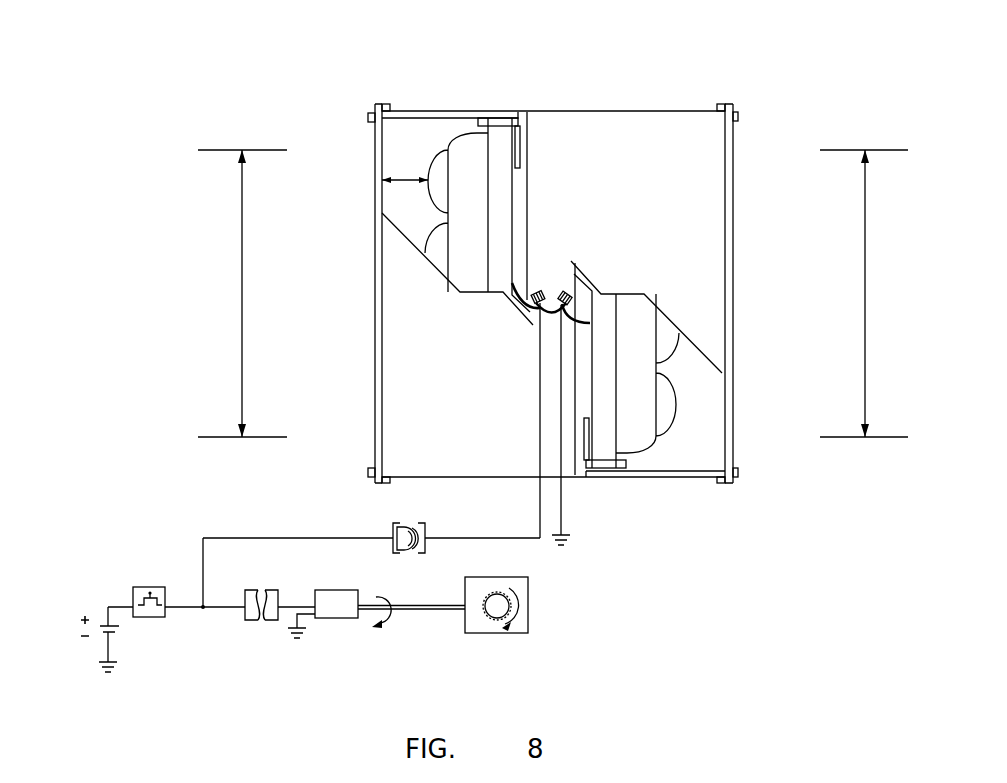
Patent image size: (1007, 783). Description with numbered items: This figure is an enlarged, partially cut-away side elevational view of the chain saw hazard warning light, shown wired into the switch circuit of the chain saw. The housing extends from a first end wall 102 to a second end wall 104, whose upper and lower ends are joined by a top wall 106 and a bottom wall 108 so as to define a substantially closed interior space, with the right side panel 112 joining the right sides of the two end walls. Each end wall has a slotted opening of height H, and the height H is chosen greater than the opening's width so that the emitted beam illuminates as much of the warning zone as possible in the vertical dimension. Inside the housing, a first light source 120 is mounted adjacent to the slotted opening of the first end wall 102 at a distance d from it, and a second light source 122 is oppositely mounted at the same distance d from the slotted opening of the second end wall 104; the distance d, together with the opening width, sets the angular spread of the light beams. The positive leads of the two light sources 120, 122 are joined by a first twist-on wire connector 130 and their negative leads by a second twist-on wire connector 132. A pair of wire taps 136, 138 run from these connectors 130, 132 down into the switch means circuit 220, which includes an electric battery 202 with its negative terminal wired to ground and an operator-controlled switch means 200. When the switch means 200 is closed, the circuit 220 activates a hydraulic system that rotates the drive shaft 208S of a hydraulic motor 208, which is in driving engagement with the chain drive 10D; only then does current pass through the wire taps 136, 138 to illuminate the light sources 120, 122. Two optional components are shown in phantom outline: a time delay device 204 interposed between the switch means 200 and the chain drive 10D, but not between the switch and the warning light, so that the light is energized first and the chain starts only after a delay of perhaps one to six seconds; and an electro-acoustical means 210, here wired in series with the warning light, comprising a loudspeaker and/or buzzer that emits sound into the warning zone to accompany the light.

The first end wall 102 is at (374, 138).
The second end wall 104 is at (733, 138).
The top wall 106 is at (438, 111).
The bottom wall 108 is at (422, 477).
The right side panel 112 is at (695, 210).
The first light source 120 is at (433, 165).
The second light source 122 is at (637, 423).
The first twist-on wire connector 130 is at (575, 268).
The second twist-on wire connector 132 is at (568, 302).
The wire tap 136 is at (493, 477).
The wire tap 138 is at (540, 522).
The switch means 200 is at (148, 587).
The electric battery 202 is at (118, 633).
The time delay device 204 is at (270, 620).
The hydraulic motor 208 is at (335, 618).
The drive shaft 208S is at (418, 609).
The electro-acoustical means 210 is at (410, 553).
The switch means circuit 220 is at (184, 500).
The chain drive 10D is at (528, 607).
The distance d is at (403, 177).
The height H is at (553, 293).